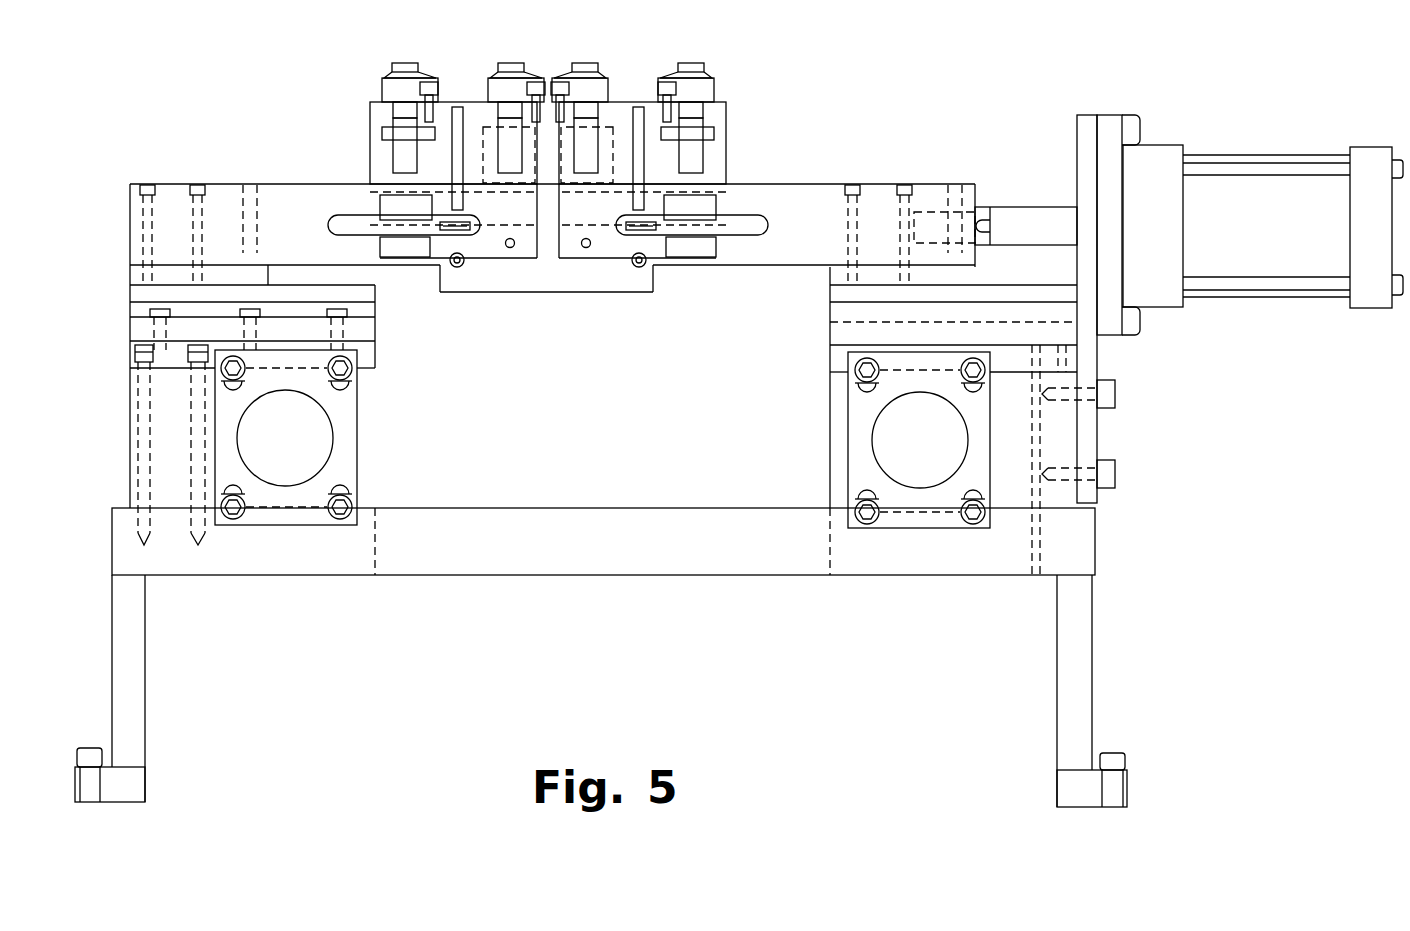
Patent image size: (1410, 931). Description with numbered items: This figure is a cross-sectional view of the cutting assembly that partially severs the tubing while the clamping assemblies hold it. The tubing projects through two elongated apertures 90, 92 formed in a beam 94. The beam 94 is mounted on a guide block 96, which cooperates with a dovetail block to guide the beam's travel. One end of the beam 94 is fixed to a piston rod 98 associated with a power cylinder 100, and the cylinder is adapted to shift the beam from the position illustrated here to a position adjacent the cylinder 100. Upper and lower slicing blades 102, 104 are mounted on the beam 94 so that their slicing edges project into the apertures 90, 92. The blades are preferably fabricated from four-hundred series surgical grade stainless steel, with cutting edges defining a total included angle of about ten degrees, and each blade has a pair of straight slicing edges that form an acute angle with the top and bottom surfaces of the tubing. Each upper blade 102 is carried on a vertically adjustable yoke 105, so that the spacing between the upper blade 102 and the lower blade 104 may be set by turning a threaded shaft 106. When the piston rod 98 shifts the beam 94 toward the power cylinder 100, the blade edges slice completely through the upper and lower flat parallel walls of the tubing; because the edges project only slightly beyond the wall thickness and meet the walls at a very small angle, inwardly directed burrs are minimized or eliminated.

The elongated aperture 90 is at (357, 222).
The elongated aperture 92 is at (750, 222).
The beam 94 is at (264, 184).
The guide block 96 is at (130, 272).
The piston rod 98 is at (1027, 207).
The power cylinder 100 is at (1137, 185).
The upper slicing blade 102 is at (407, 150).
The lower slicing blade 104 is at (402, 248).
The vertically adjustable yoke 105 is at (425, 157).
The threaded shaft 106 is at (383, 190).